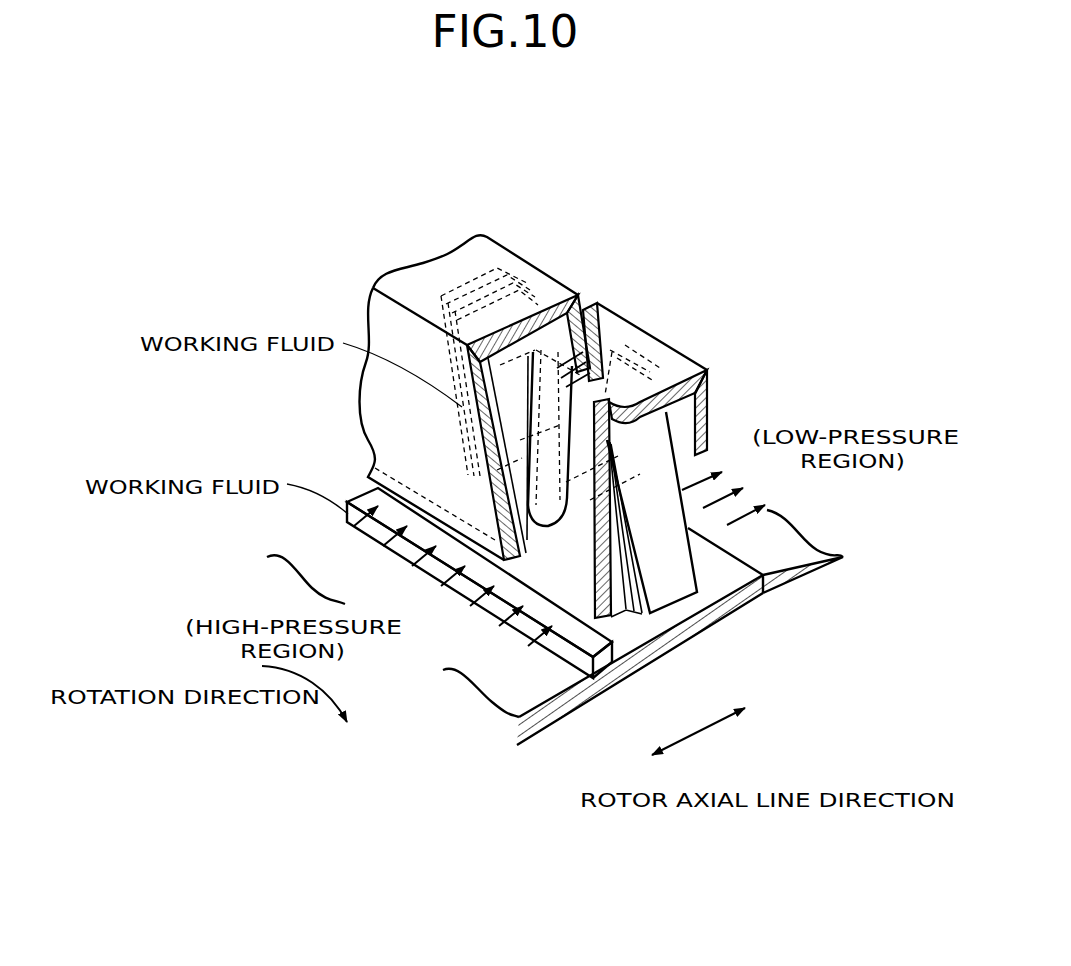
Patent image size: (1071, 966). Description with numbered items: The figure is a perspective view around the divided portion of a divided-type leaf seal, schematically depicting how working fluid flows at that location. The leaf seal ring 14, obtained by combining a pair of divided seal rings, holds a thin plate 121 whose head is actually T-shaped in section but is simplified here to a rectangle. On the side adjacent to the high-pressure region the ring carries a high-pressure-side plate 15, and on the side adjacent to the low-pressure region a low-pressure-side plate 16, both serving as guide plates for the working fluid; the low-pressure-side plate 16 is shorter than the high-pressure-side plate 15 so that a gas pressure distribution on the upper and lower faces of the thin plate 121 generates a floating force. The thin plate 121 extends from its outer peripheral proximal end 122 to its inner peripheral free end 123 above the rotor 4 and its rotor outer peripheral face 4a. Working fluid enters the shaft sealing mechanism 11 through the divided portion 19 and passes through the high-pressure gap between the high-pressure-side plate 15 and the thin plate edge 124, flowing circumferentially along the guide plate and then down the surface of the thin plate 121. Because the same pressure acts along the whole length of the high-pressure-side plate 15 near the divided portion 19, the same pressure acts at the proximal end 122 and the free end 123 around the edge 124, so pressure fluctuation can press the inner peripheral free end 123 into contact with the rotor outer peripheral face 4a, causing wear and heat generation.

The shaft sealing mechanism 11 is at (593, 186).
The leaf seal ring 14 is at (485, 247).
The high-pressure-side plate 15 is at (415, 470).
The low-pressure-side plate 16 is at (603, 320).
The divided portion 19 is at (583, 297).
The thin plate 121 is at (552, 560).
The outer peripheral proximal end 122 is at (533, 302).
The inner peripheral free end 123 is at (505, 578).
The thin plate edge 124 is at (470, 585).
The rotor 4 is at (677, 638).
The rotor outer peripheral face 4a is at (598, 640).